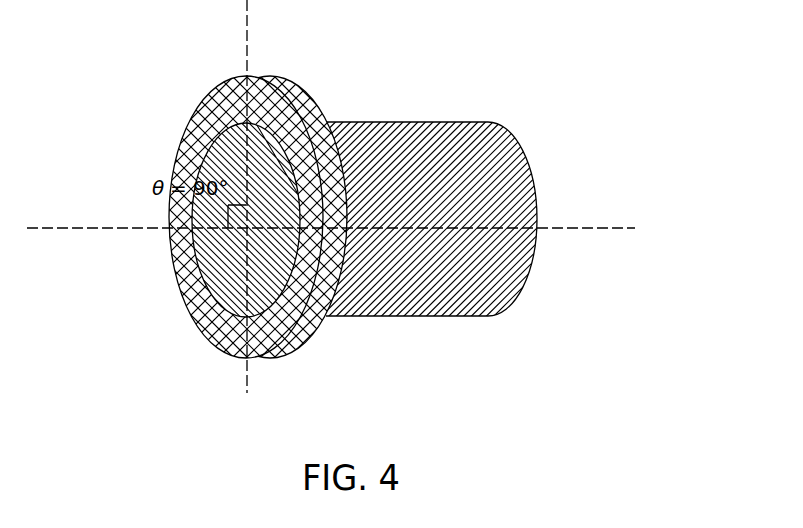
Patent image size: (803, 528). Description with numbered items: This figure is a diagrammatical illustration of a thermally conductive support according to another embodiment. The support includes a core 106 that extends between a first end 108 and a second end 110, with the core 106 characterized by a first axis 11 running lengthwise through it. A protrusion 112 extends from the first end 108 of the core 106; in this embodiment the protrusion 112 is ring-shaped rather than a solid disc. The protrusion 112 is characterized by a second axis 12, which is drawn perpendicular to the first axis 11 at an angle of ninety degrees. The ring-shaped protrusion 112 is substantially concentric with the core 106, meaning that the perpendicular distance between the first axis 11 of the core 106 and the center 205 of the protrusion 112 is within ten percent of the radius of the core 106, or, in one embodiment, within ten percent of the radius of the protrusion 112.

The first axis 11 is at (612, 228).
The second axis 12 is at (247, 10).
The core 106 is at (421, 122).
The first end 108 is at (262, 353).
The second end 110 is at (488, 317).
The protrusion 112 is at (304, 85).
The center 205 is at (247, 228).